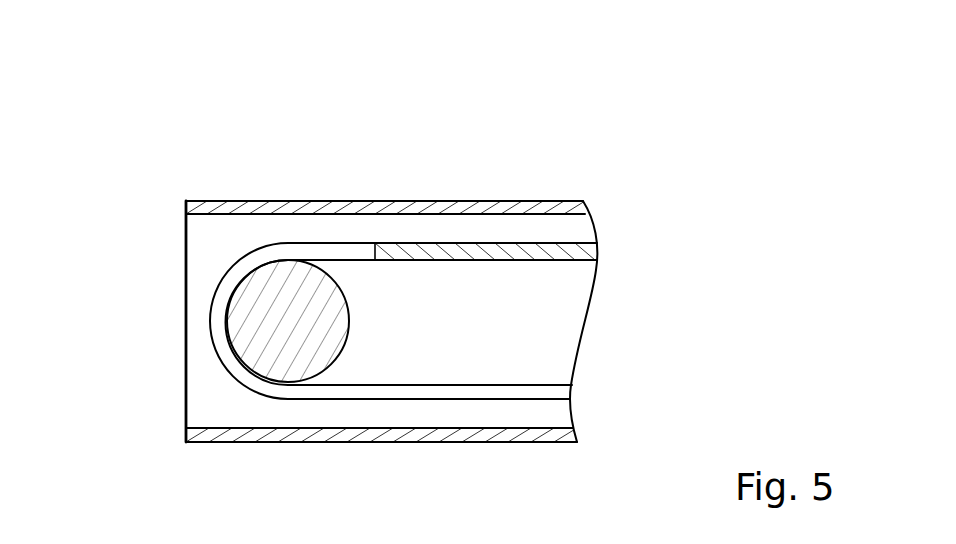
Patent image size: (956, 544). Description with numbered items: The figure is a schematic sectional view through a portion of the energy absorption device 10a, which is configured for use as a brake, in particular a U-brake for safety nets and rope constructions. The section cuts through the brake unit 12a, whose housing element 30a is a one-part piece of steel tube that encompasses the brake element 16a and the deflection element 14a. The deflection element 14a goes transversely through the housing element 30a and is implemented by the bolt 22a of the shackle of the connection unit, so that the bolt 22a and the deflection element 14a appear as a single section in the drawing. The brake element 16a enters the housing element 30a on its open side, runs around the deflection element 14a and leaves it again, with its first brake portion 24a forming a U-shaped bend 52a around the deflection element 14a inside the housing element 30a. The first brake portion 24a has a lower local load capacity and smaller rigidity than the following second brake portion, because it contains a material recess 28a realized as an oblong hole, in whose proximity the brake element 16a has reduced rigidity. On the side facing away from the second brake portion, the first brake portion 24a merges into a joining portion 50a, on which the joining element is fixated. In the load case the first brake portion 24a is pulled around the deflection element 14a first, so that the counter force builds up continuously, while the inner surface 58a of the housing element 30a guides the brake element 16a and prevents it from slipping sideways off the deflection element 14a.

The energy absorption device 10a is at (593, 170).
The brake unit 12a is at (310, 184).
The deflection element 14a is at (306, 318).
The brake element 16a is at (557, 396).
The bolt 22a is at (288, 321).
The first brake portion 24a is at (232, 378).
The material recess 28a is at (273, 257).
The housing element 30a is at (500, 200).
The joining portion 50a is at (549, 232).
The U-shaped bend 52a is at (222, 266).
The inner surface 58a is at (557, 437).